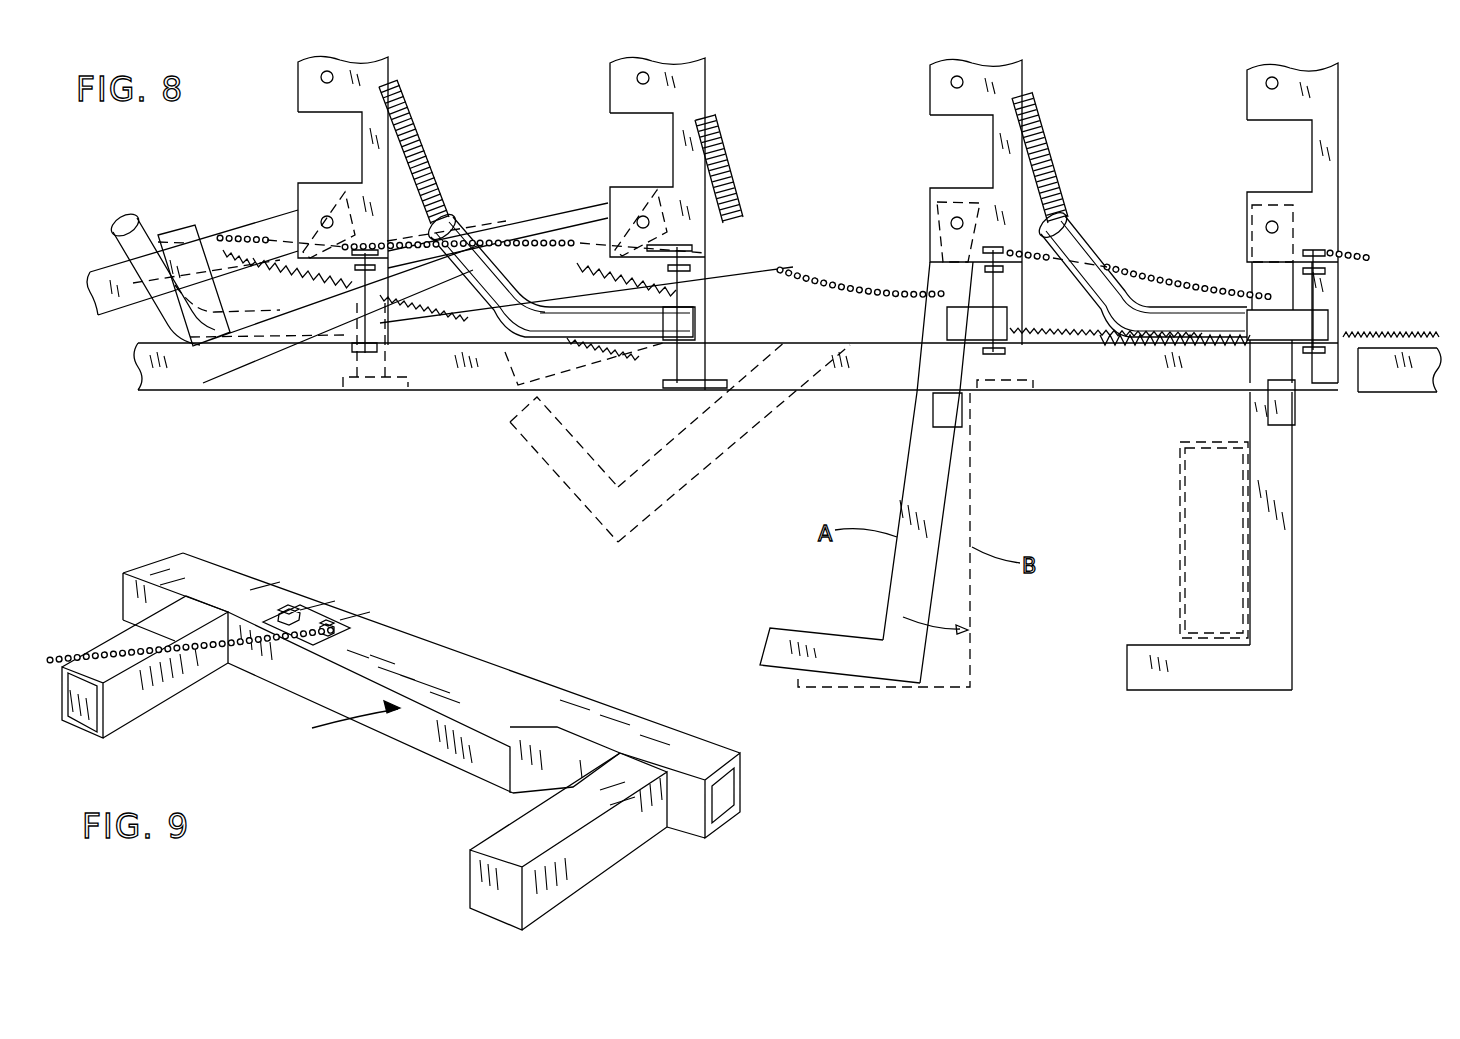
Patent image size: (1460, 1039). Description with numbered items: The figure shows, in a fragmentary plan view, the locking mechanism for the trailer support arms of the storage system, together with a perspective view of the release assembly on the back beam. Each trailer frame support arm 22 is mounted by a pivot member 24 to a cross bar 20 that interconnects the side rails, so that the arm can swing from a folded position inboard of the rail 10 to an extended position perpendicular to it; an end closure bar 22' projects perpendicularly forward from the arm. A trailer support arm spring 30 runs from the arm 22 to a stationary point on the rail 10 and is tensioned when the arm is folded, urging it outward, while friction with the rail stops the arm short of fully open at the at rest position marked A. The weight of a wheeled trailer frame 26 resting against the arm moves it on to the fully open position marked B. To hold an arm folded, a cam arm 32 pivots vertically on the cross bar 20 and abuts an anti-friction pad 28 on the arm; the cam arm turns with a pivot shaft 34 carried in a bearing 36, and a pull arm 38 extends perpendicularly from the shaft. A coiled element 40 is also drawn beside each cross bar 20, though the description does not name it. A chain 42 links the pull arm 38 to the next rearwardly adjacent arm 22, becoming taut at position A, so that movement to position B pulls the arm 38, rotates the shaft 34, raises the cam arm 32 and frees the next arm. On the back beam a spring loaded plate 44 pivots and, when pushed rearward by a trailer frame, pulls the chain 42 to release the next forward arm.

In FIG. 8, the side rail 10 is at (1120, 392).
In FIG. 9, the side rail 10 is at (180, 690).
In FIG. 8, the cross bar 20 is at (362, 142).
In FIG. 8, the trailer frame support arm 22 is at (766, 455).
In FIG. 8, the end closure bar 22' is at (867, 581).
In FIG. 9, the end closure bar 22' is at (569, 841).
In FIG. 8, the pivot member 24 is at (960, 218).
In FIG. 9, the pivot member 24 is at (287, 610).
In FIG. 8, the wheeled trailer frame 26 is at (1220, 452).
In FIG. 8, the anti-friction pad 28 is at (147, 312).
In FIG. 8, the trailer support arm spring 30 is at (613, 290).
In FIG. 8, the cam arm 32 is at (127, 213).
In FIG. 8, the pivot shaft 34 is at (1003, 290).
In FIG. 8, the bearing 36 is at (1330, 273).
In FIG. 8, the pull arm 38 is at (993, 247).
In FIG. 8, the coil spring 40 is at (418, 140).
In FIG. 8, the chain 42 is at (247, 232).
In FIG. 9, the chain 42 is at (108, 650).
In FIG. 9, the plate 44 is at (403, 728).